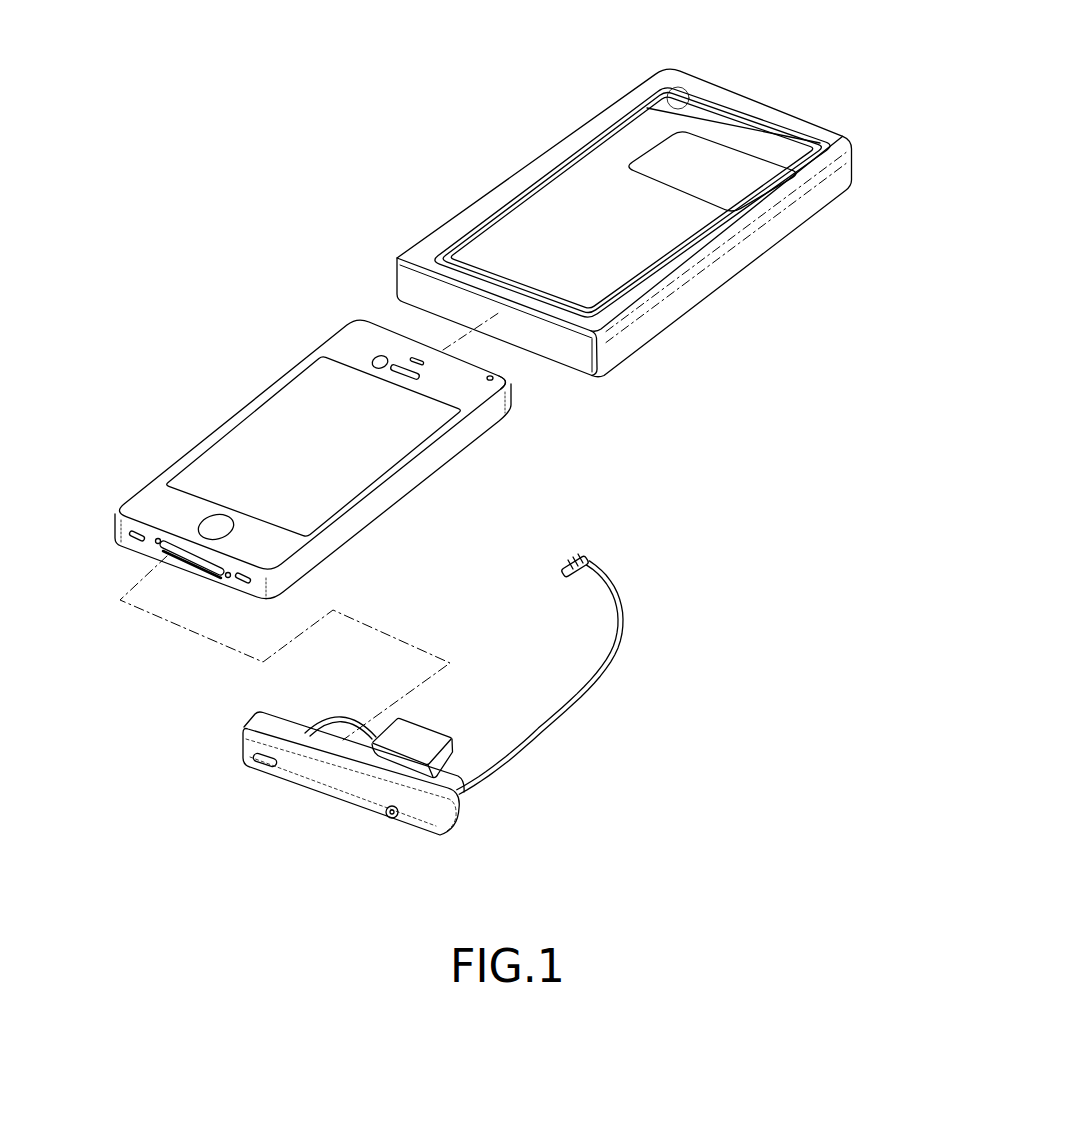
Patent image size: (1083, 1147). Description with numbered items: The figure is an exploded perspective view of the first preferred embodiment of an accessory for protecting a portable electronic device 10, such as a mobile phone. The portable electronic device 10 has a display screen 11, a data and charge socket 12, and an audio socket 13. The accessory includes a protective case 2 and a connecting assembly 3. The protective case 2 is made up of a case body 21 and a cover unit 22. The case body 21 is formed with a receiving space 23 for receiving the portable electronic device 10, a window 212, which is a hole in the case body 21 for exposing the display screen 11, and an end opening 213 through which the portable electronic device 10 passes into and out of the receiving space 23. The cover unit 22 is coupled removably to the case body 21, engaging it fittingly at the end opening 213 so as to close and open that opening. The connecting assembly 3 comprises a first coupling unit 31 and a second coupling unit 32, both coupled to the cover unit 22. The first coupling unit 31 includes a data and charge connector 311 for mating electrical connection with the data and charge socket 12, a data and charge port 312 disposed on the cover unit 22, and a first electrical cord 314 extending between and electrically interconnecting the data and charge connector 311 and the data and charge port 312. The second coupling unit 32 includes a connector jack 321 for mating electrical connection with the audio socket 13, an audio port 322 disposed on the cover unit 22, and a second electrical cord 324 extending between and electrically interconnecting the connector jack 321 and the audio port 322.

The protective case 2 is at (430, 181).
The case body 21 is at (766, 260).
The window 212 is at (690, 98).
The end opening 213 is at (407, 280).
The receiving space 23 is at (587, 170).
The cover unit 22 is at (283, 788).
The portable electronic device 10 is at (252, 346).
The display screen 11 is at (238, 432).
The data and charge socket 12 is at (167, 552).
The audio socket 13 is at (505, 373).
The connecting assembly 3 is at (561, 784).
The first coupling unit 31 is at (444, 701).
The data and charge connector 311 is at (433, 733).
The data and charge port 312 is at (264, 760).
The first electrical cord 314 is at (333, 727).
The second coupling unit 32 is at (621, 671).
The connector jack 321 is at (565, 572).
The audio port 322 is at (390, 819).
The second electrical cord 324 is at (548, 738).